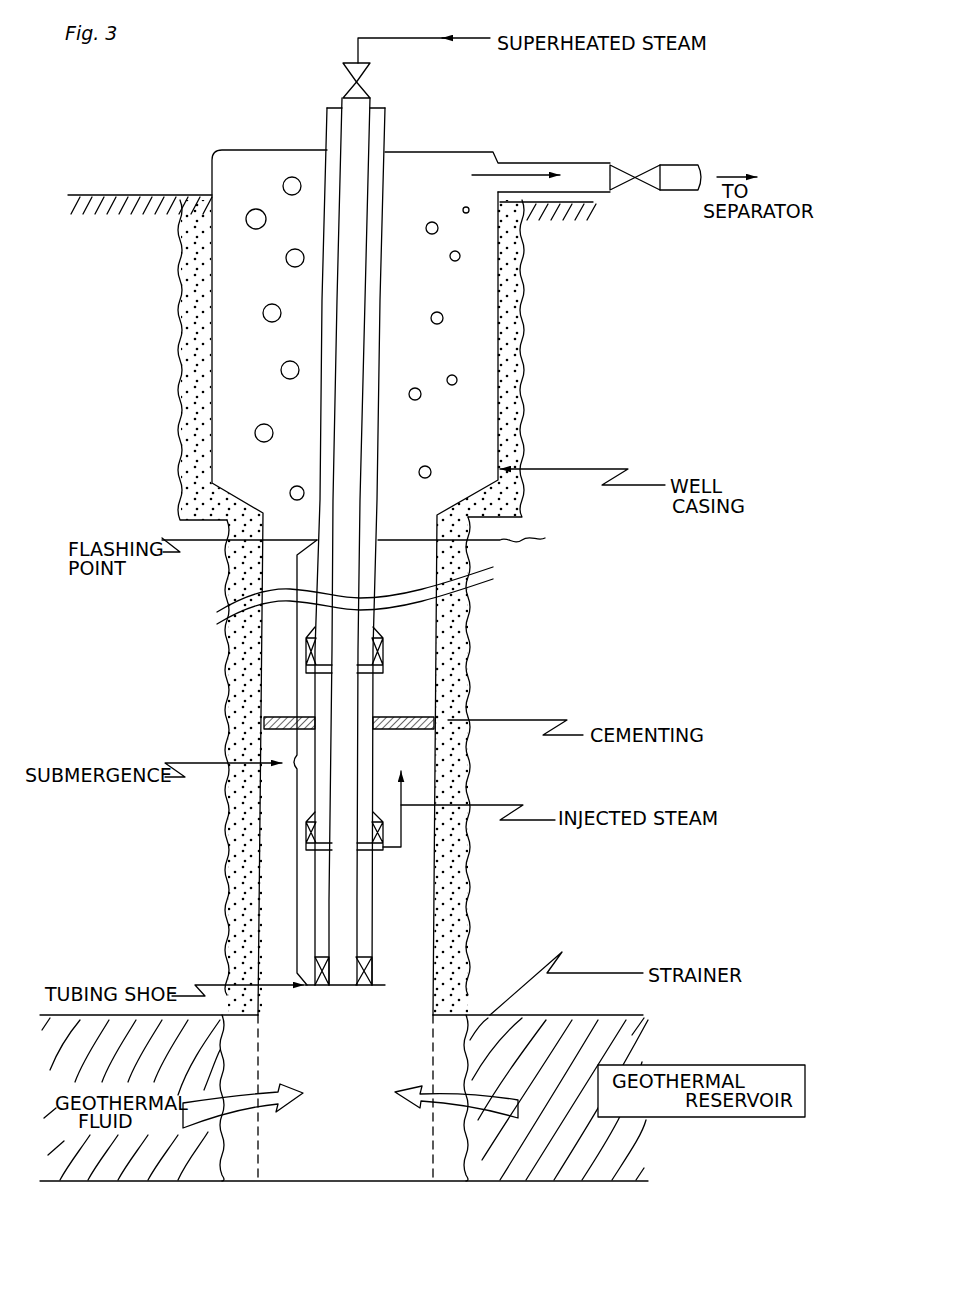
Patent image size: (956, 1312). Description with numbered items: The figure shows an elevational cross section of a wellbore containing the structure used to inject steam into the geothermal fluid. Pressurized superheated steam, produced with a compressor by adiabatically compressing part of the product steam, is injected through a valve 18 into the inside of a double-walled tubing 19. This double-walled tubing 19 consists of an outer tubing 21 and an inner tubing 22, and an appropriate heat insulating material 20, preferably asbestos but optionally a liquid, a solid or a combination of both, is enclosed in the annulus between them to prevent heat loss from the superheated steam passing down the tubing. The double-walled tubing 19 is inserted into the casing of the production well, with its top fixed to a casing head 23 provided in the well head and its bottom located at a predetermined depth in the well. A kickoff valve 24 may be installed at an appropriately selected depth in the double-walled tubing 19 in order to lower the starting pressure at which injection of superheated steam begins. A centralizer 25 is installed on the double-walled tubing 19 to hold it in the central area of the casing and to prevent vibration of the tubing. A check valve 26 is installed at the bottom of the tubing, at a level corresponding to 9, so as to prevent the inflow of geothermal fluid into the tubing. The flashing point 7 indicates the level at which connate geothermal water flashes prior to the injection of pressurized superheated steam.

The flashing point 7 is at (468, 542).
The check valve level 9 is at (468, 988).
The valve 18 is at (372, 82).
The double-walled tubing 19 is at (528, 541).
The heat insulating material 20 is at (331, 397).
The outer tubing 21 is at (386, 341).
The inner tubing 22 is at (371, 288).
The casing head 23 is at (271, 147).
The kickoff valve 24 is at (387, 643).
The centralizer 25 is at (263, 722).
The check valve 26 is at (375, 968).